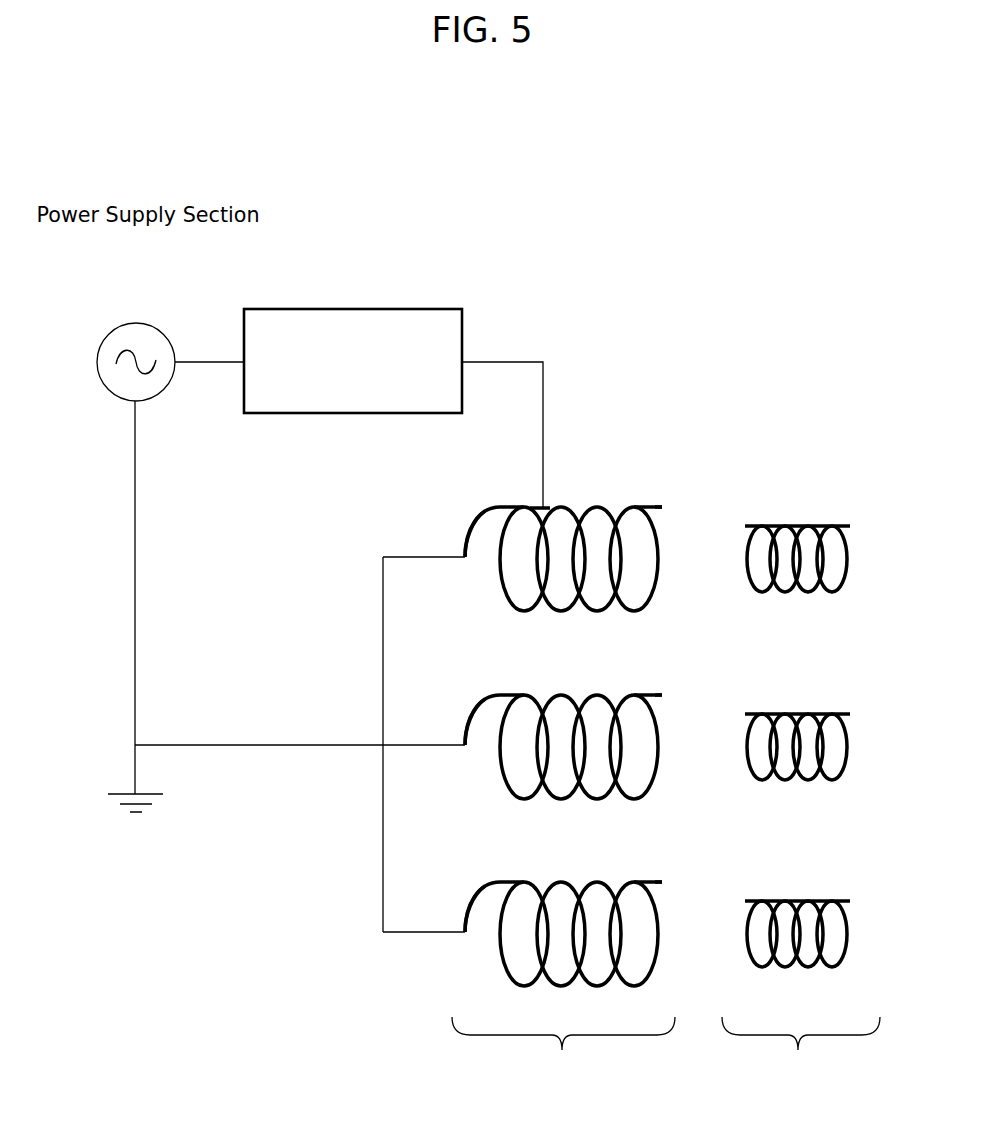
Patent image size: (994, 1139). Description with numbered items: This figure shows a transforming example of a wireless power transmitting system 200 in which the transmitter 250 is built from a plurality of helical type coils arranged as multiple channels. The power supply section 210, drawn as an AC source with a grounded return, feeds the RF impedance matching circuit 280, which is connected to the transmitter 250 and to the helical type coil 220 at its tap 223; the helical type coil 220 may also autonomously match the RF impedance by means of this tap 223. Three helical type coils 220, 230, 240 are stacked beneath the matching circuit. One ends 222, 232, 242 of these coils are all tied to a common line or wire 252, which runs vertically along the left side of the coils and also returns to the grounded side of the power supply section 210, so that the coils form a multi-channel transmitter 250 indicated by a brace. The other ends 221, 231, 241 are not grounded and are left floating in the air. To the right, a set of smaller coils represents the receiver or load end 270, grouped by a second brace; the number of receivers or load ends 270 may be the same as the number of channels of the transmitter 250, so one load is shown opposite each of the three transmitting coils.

The wireless power transmitting system 200 is at (500, 186).
The power supply section 210 is at (134, 323).
The RF impedance matching circuit 280 is at (352, 309).
The helical type coil 220 is at (584, 539).
The other end of helical type coil 221 is at (662, 507).
The one end of helical type coil 222 is at (465, 558).
The tap 223 is at (563, 505).
The second antenna coil 230 is at (584, 726).
The other end of helical type coil 231 is at (662, 695).
The one end of helical type coil 232 is at (465, 746).
The third antenna coil 240 is at (584, 913).
The other end of helical type coil 241 is at (662, 882).
The one end of helical type coil 242 is at (465, 933).
The transmitter 250 is at (563, 1050).
The common line or wire 252 is at (383, 864).
The receiver or load end 270 is at (801, 804).